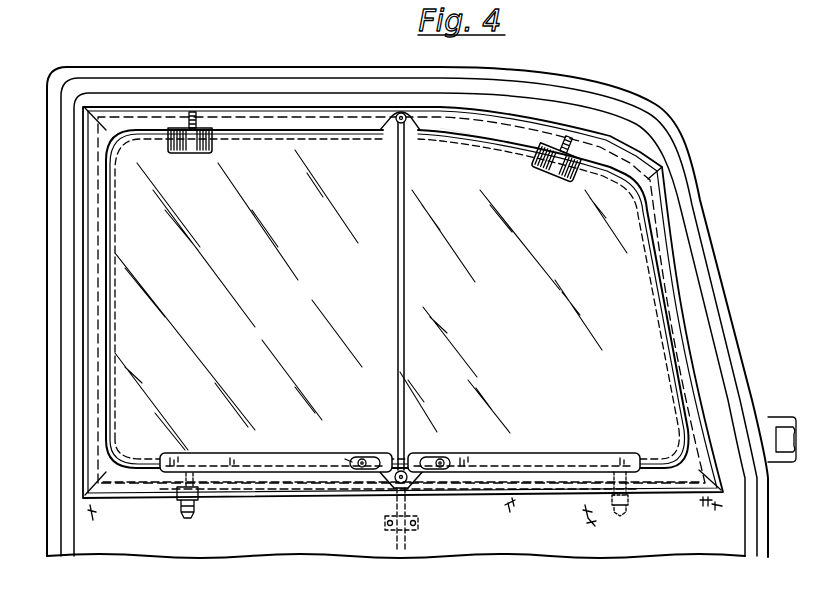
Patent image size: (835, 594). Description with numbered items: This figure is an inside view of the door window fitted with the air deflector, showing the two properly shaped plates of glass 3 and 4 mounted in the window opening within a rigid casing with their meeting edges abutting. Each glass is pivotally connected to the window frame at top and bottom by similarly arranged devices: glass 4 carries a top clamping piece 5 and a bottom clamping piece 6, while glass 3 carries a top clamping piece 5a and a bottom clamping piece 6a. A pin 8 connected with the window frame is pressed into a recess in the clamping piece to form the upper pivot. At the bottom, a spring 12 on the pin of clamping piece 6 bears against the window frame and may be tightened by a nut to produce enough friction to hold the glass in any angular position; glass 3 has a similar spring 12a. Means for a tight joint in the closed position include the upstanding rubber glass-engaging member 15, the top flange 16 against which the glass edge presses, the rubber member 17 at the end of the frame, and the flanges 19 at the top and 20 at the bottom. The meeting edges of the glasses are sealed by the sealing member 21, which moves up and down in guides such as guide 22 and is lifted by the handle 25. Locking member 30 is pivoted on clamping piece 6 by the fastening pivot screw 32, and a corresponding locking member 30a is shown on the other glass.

The plate of glass 3 is at (504, 310).
The plate of glass 4 is at (312, 308).
The clamping piece 5 is at (190, 150).
The clamping piece 5a is at (548, 172).
The clamping piece 6 is at (258, 447).
The clamping piece 6a is at (517, 460).
The pin 8 is at (421, 284).
The spring 12 is at (199, 504).
The spring 12a is at (633, 516).
The glass-engaging member 15 is at (193, 51).
The flange 16 is at (282, 46).
The rubber member 17 is at (140, 46).
The flange 19 is at (325, 129).
The flange 20 is at (286, 478).
The sealing member 21 is at (406, 543).
The guide 22 is at (420, 522).
The handle 25 is at (393, 485).
The locking member 30 is at (365, 455).
The slot 30a is at (442, 457).
The fastening pivot screw 32 is at (352, 460).